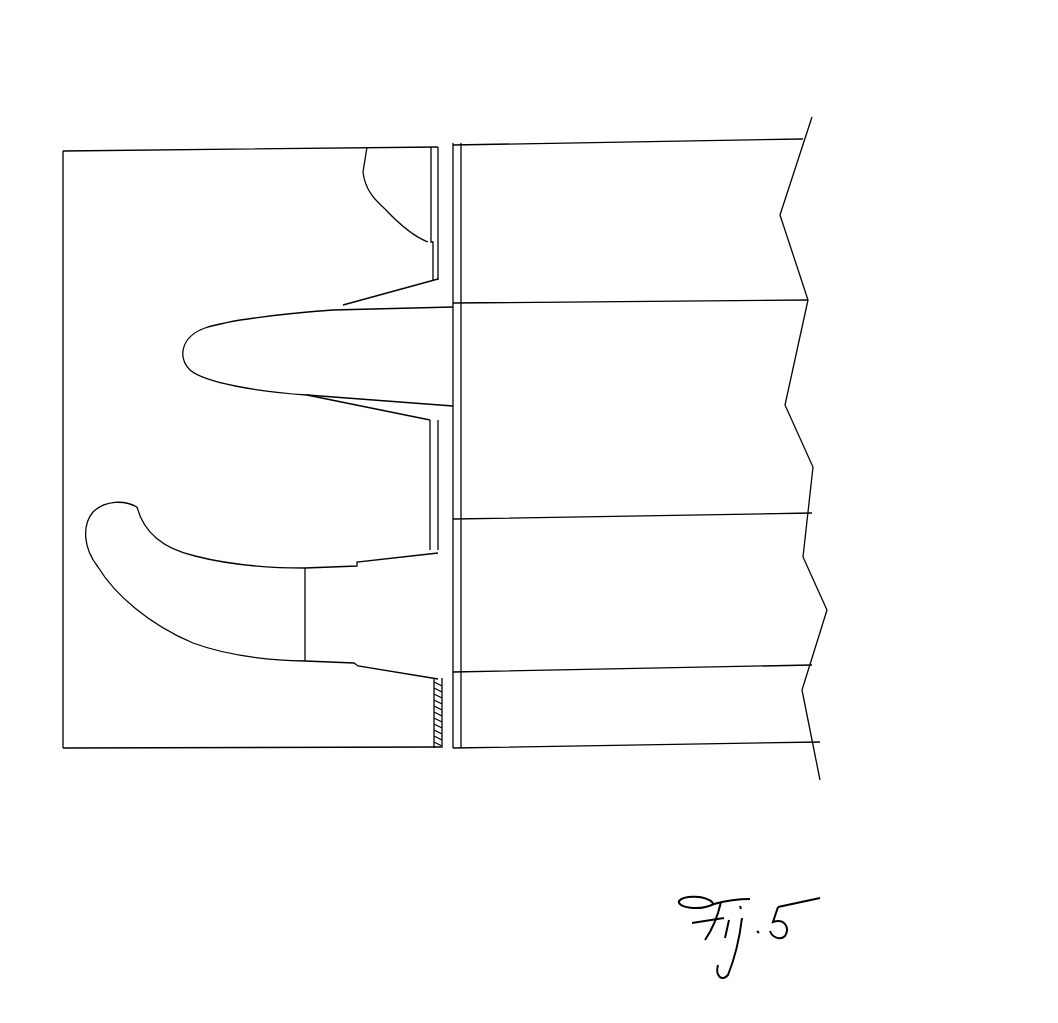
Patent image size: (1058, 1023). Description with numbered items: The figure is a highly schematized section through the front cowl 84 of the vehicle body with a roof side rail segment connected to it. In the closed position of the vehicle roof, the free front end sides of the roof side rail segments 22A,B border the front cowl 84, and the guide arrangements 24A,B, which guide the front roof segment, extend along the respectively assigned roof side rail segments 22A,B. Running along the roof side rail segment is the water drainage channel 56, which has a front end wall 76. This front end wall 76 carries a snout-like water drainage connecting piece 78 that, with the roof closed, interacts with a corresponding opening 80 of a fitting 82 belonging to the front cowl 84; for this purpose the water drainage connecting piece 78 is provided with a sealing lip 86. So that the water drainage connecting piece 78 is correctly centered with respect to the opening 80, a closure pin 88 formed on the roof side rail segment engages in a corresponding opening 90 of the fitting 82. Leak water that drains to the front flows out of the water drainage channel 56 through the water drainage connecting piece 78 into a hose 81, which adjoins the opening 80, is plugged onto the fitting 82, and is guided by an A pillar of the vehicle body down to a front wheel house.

The front cowl 84 is at (168, 150).
The fitting 82 is at (365, 150).
The opening 90 is at (343, 305).
The closure pin 88 is at (212, 338).
The sealing lip 86 is at (355, 557).
The hose 81 is at (197, 643).
The opening 80 is at (383, 678).
The water drainage connecting piece 78 is at (400, 633).
The front end wall 76 is at (468, 635).
The water drainage channel 56 is at (598, 645).
The roof side rail segments 22A,B is at (637, 140).
The guide arrangements 24A,B is at (762, 400).